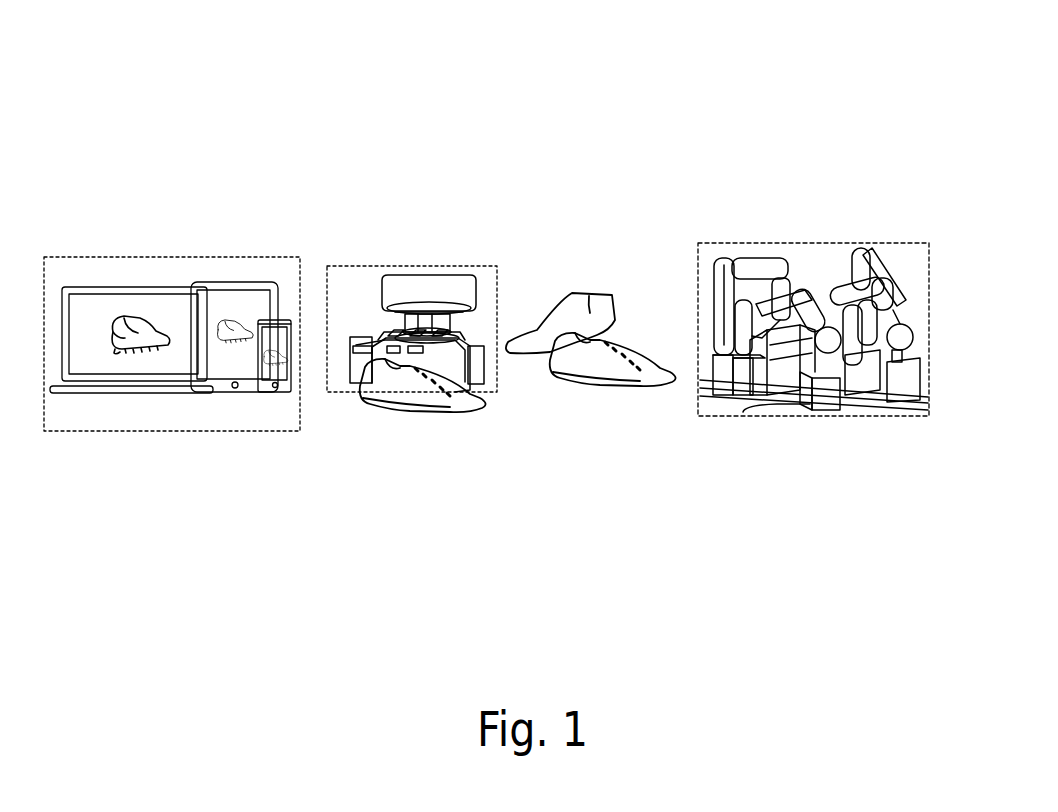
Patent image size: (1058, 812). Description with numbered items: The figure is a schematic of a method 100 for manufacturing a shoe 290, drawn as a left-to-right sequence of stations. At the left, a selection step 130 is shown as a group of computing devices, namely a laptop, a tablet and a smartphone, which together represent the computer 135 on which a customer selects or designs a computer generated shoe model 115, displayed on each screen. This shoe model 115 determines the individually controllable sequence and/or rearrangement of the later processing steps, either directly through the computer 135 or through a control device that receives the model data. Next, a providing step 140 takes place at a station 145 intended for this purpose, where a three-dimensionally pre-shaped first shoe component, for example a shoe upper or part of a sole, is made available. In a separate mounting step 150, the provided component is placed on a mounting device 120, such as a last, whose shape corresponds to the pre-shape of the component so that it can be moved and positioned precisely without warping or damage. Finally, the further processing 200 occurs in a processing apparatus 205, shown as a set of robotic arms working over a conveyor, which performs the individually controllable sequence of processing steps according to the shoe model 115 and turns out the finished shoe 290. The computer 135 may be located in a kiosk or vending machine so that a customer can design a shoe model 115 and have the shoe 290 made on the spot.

The method 100 is at (222, 127).
The computer generated shoe model 115 is at (128, 348).
The mounting device 120 is at (587, 312).
The selection step 130 is at (131, 271).
The computer 135 is at (178, 386).
The providing 140 is at (420, 254).
The station 145 is at (393, 343).
The mounting step 150 is at (598, 256).
The processing 200 is at (810, 236).
The processing apparatus 205 is at (900, 264).
The shoe 290 is at (850, 392).